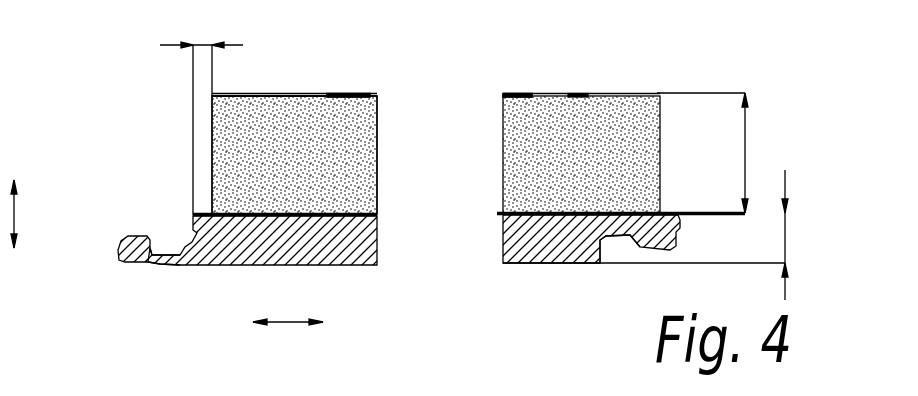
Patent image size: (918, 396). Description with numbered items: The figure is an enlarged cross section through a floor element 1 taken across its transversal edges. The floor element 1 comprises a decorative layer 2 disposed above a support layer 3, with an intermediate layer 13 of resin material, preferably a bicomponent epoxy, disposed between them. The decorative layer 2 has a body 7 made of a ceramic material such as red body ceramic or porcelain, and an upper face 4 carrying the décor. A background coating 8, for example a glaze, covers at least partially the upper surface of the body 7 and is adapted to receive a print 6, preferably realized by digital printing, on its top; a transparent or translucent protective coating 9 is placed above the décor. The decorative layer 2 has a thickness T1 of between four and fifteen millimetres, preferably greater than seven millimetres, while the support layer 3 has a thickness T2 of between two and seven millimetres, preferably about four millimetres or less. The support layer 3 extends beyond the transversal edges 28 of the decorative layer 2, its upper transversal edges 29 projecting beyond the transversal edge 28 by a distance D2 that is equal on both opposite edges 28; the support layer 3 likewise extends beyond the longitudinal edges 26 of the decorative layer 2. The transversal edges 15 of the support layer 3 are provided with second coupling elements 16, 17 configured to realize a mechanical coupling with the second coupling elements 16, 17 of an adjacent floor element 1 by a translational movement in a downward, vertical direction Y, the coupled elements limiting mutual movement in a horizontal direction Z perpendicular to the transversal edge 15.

The floor element 1 is at (273, 82).
The decorative layer 2 is at (212, 150).
The support layer 3 is at (540, 263).
The upper face 4 is at (370, 95).
The print 6 is at (337, 95).
The body 7 is at (218, 181).
The background coating 8 is at (503, 97).
The protective coating 9 is at (503, 95).
The intermediate layer 13 is at (503, 214).
The transversal edges 15 is at (140, 268).
The second coupling element 16 is at (640, 250).
The second coupling element 17 is at (178, 265).
The longitudinal edges 26 is at (657, 125).
The transversal edges 28 is at (217, 137).
The upper transversal edges 29 is at (193, 216).
The distance D2 is at (200, 44).
The thickness of the decorative layer T1 is at (745, 150).
The thickness of the support layer T2 is at (785, 232).
The vertical direction Y is at (14, 215).
The horizontal direction Z is at (293, 322).